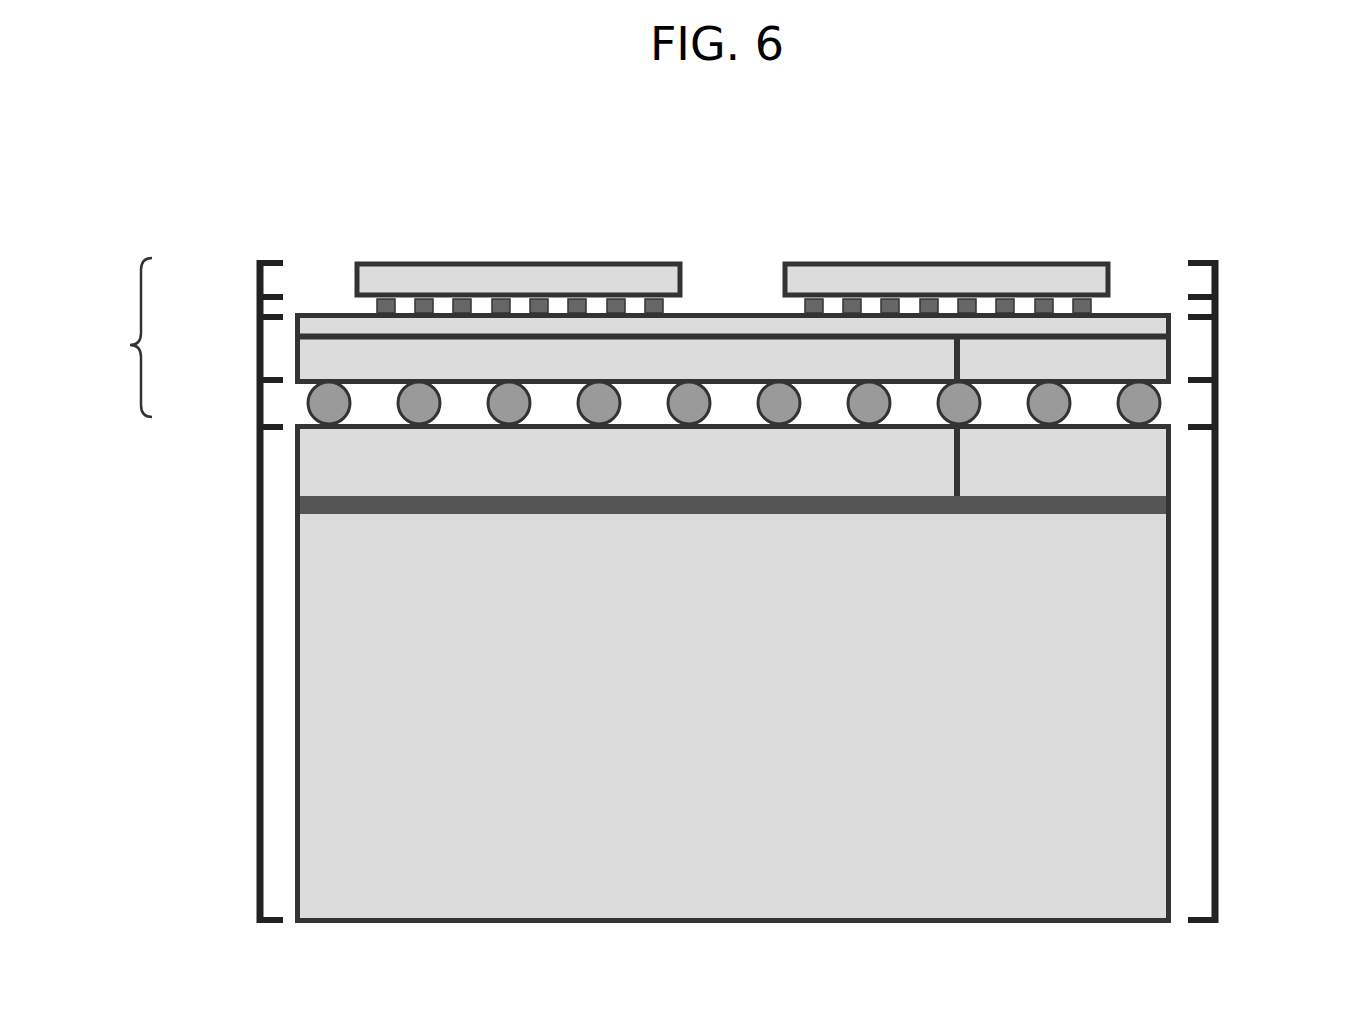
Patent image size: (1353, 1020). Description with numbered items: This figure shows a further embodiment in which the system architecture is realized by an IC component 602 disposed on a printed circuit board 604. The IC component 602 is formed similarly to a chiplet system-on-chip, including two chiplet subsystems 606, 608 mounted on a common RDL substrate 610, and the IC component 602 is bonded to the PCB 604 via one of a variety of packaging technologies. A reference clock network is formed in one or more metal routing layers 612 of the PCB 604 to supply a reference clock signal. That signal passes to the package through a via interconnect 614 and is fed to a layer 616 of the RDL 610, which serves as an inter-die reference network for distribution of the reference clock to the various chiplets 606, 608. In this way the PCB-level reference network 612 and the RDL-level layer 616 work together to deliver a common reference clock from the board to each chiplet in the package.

The IC component 602 is at (704, 340).
The printed circuit board 604 is at (736, 674).
The chiplet subsystem 606 is at (357, 279).
The chiplet subsystem 608 is at (1113, 279).
The RDL substrate 610 is at (822, 349).
The metal routing layer 612 is at (563, 540).
The package via interconnect 614 is at (960, 469).
The layer of the RDL 616 is at (733, 302).